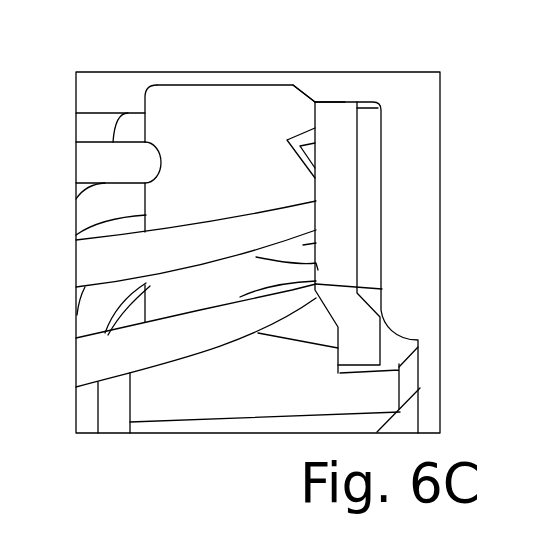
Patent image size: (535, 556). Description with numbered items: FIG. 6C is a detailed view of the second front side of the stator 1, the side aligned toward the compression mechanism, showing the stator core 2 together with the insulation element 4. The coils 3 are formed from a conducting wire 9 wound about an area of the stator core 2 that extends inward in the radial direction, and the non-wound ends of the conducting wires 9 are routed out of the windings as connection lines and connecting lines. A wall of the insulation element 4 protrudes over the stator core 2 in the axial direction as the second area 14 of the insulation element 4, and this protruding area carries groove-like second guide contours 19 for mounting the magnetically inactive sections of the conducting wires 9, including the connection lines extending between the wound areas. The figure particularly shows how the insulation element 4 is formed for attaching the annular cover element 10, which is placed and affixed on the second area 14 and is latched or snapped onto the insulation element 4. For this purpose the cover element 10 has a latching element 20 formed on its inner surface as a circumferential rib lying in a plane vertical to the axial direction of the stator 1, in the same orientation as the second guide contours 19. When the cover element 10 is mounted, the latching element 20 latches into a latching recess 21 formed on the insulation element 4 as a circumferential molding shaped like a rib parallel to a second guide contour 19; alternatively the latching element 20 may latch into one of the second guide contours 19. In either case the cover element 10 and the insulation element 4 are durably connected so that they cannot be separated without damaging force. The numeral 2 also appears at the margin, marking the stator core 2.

The stator 1 is at (531, 30).
The stator core 2 is at (534, 372).
The coils 3 is at (113, 205).
The insulation element 4 is at (367, 392).
The conducting wire 9 is at (100, 258).
The cover element 10 is at (330, 190).
The second area of the insulation element 14 is at (190, 117).
The second guide contours 19 is at (303, 245).
The latching element 20 is at (315, 153).
The latching recess 21 is at (320, 135).